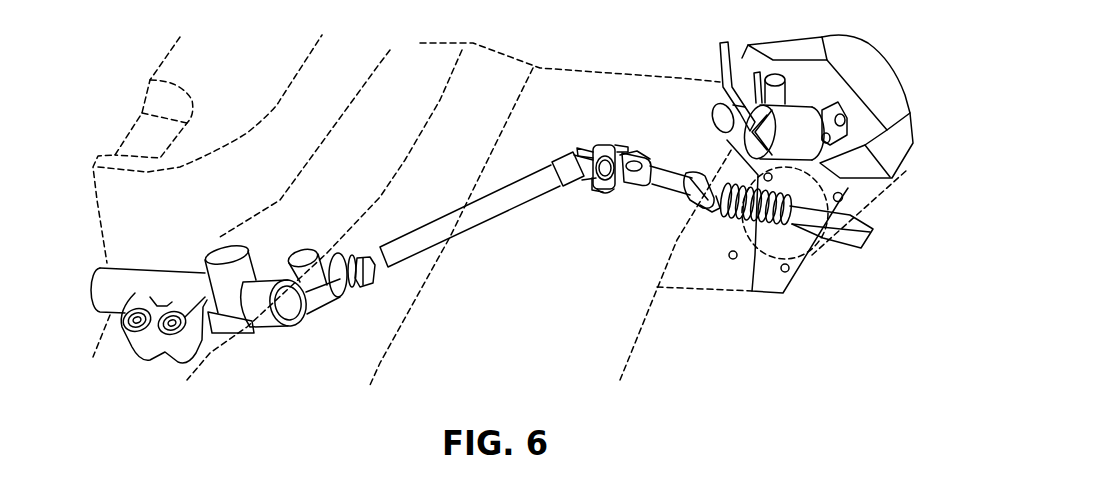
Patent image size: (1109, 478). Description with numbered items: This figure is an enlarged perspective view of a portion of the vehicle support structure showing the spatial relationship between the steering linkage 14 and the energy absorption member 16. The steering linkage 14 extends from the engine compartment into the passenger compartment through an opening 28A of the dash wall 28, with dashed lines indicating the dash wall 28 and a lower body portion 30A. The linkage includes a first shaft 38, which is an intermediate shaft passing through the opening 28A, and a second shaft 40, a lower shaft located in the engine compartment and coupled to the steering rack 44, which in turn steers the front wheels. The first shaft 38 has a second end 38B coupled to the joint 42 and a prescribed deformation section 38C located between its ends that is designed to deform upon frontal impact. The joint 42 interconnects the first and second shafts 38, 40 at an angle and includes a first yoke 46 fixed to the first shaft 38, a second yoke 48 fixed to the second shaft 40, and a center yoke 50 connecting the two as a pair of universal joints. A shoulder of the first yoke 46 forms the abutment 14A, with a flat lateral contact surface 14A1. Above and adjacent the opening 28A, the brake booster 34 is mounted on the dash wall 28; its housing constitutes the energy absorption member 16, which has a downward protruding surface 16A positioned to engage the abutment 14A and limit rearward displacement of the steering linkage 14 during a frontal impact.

The steering linkage 14 is at (463, 148).
The abutment 14A is at (589, 199).
The contact surface 14A1 is at (628, 144).
The energy absorption member 16 is at (805, 167).
The downward protruding surface 16A is at (727, 132).
The dash wall 28 is at (582, 72).
The opening 28A is at (810, 262).
The floor panel 30A is at (692, 288).
The brake booster 34 is at (745, 58).
The first shaft 38 is at (712, 212).
The second end 38B is at (685, 175).
The prescribed deformation section 38C is at (755, 256).
The second shaft 40 is at (497, 214).
The joint 42 is at (600, 144).
The steering rack 44 is at (150, 270).
The first yoke 46 is at (650, 162).
The second yoke 48 is at (553, 162).
The center yoke 50 is at (607, 188).